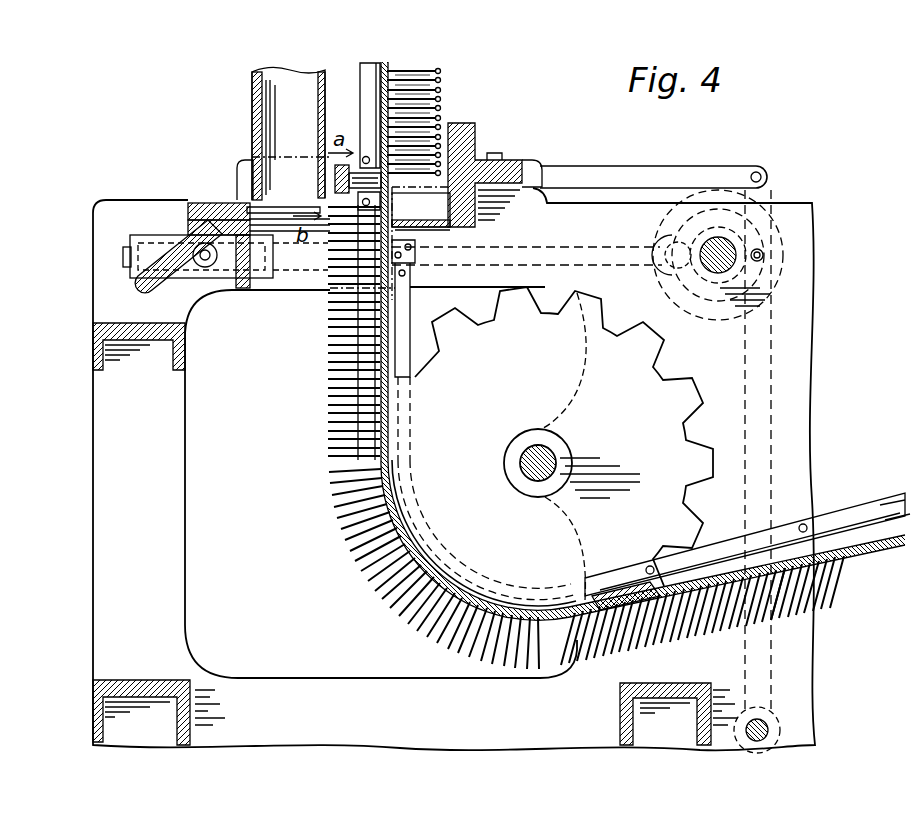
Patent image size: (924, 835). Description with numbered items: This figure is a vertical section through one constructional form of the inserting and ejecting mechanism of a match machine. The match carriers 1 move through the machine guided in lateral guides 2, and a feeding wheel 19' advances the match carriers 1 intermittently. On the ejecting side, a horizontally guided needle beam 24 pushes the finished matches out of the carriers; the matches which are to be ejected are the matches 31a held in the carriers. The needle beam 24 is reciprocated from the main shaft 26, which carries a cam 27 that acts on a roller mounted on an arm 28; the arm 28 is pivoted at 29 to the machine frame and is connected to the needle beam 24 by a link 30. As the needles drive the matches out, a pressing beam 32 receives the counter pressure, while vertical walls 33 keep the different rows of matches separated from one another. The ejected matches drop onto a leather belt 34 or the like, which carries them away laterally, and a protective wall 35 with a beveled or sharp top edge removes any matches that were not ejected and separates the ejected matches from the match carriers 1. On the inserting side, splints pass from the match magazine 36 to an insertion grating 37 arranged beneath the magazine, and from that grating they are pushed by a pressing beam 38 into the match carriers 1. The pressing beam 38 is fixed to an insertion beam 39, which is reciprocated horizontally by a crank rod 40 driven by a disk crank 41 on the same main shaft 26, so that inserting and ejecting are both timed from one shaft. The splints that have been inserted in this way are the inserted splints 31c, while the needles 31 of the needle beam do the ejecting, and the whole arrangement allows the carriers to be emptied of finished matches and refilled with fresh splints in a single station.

The match carrier 1 is at (383, 407).
The lateral guide 2 is at (860, 527).
The feeding wheel 19' is at (592, 341).
The needle beam 24 is at (338, 236).
The main shaft 26 is at (715, 278).
The cam 27 is at (750, 305).
The arm 28 is at (781, 392).
The pivot 29 is at (770, 728).
The link 30 is at (671, 177).
The needles 31 is at (440, 580).
The matches to be ejected 31a is at (400, 92).
The inserted splints 31c is at (337, 352).
The pressing beam 32 is at (468, 152).
The vertical wall 33 is at (415, 112).
The leather belt 34 is at (437, 227).
The protective wall 35 is at (392, 217).
The match magazine 36 is at (288, 133).
The insertion grating 37 is at (278, 198).
The pressing beam 38 is at (205, 203).
The insertion beam 39 is at (168, 243).
The crank rod 40 is at (578, 250).
The disk crank 41 is at (668, 268).